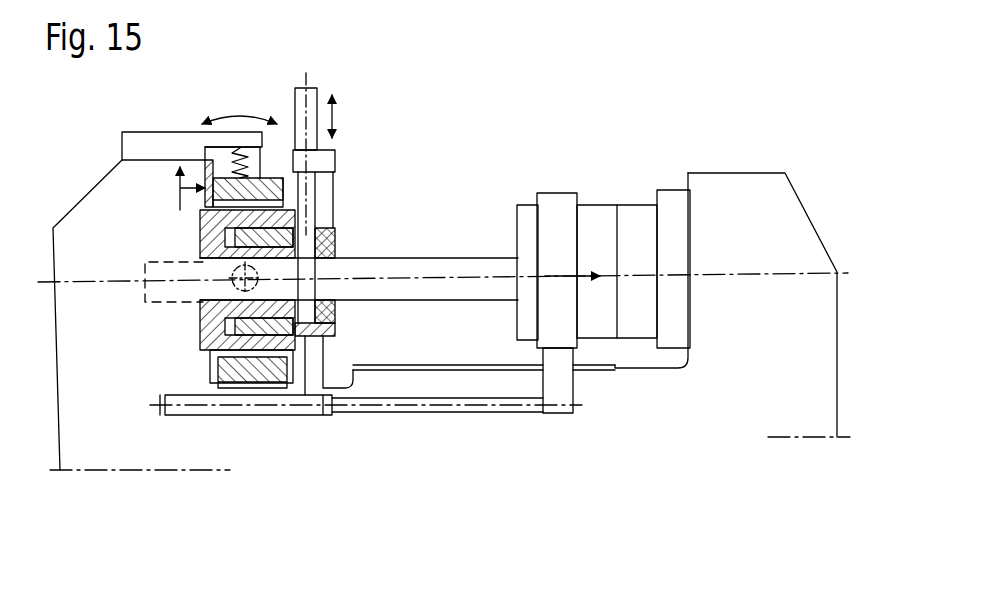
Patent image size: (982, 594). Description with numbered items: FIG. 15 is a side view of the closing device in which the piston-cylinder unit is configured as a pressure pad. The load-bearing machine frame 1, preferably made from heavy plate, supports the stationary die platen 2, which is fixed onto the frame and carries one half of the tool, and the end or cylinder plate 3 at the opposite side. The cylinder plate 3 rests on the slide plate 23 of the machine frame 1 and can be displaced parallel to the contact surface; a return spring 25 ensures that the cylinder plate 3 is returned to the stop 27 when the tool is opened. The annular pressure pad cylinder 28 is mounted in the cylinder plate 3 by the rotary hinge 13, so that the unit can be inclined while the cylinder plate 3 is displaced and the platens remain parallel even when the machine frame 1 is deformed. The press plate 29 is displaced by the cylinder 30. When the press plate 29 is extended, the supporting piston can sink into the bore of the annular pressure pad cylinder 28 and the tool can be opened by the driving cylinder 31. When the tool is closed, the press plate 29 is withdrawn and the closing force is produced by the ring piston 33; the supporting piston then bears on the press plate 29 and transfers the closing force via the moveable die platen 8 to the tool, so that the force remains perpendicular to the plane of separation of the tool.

The machine frame 1 is at (118, 443).
The stationary die platen 2 is at (667, 210).
The cylinder plate 3 is at (261, 177).
The moveable die platen 8 is at (562, 213).
The rotary hinge 13 is at (258, 290).
The slide plate 23 is at (207, 165).
The return spring 25 is at (240, 155).
The stop 27 is at (243, 385).
The annular pressure pad cylinder 28 is at (282, 335).
The press plate 29 is at (336, 228).
The cylinder 30 is at (312, 102).
The driving cylinder 31 is at (250, 412).
The ring piston 33 is at (330, 337).